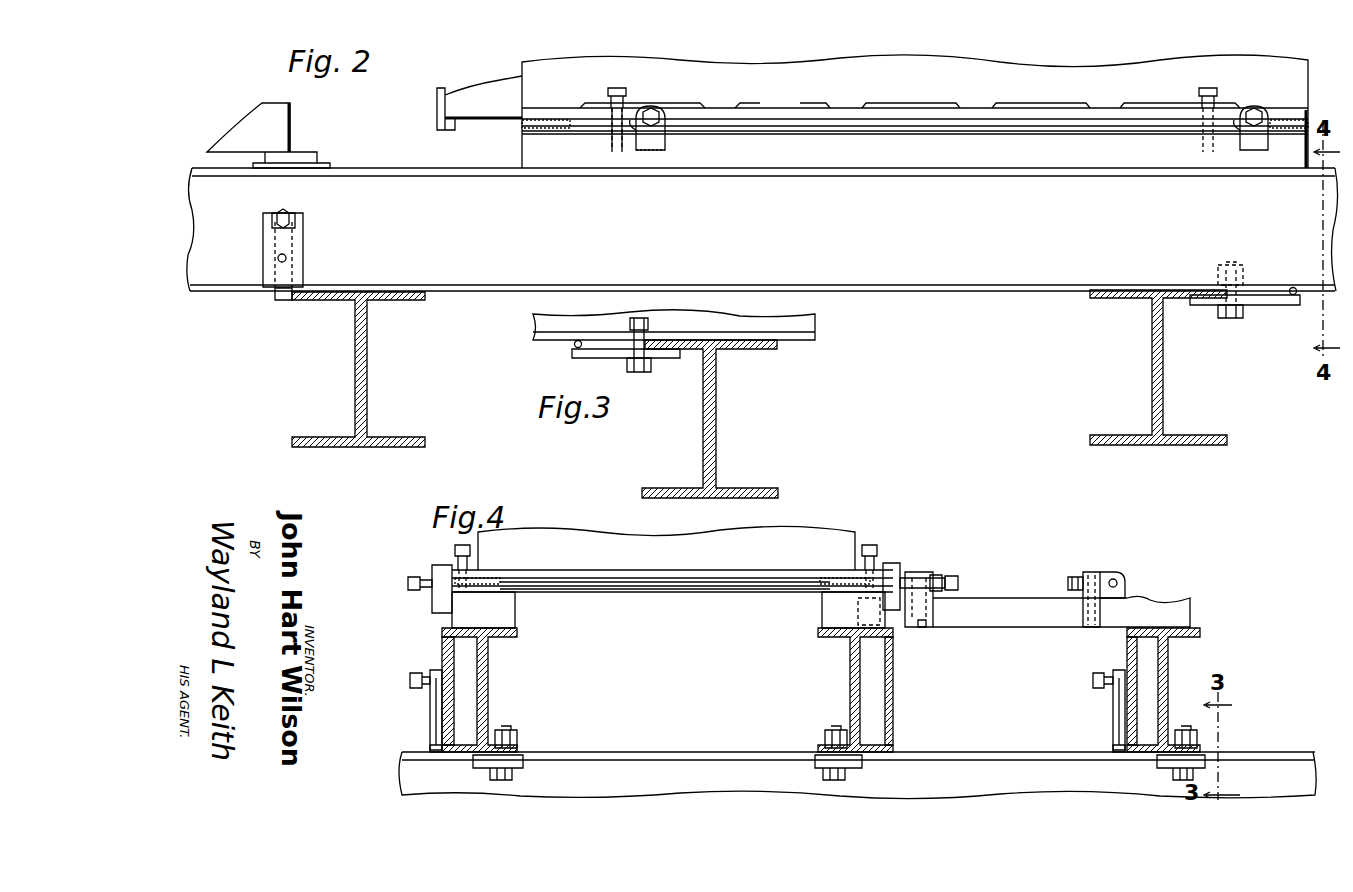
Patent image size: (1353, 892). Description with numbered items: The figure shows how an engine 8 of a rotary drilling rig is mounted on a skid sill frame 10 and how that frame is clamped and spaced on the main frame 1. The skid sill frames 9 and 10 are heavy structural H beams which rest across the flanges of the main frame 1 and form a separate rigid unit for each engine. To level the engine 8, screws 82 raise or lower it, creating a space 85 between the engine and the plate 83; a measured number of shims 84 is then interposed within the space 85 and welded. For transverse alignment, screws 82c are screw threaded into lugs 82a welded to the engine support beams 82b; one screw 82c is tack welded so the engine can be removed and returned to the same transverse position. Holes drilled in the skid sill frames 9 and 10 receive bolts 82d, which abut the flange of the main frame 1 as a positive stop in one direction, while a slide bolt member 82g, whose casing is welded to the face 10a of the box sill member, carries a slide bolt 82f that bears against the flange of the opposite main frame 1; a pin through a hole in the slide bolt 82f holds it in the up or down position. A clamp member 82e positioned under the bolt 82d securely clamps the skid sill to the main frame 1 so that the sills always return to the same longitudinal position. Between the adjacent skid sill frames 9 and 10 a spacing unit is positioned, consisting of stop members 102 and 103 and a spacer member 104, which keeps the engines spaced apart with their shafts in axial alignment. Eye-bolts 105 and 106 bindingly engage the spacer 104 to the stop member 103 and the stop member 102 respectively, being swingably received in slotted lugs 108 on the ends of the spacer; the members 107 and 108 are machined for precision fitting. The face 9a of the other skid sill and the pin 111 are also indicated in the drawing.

In FIG. 2, the main frame 1 is at (368, 367).
In FIG. 3, the main frame 1 is at (716, 408).
In FIG. 4, the main frame 1 is at (654, 760).
In FIG. 2, the engine 8 is at (810, 62).
In FIG. 4, the engine 8 is at (852, 536).
In FIG. 4, the skid sill frame 9 is at (1168, 664).
In FIG. 4, the beam plate 9a is at (1107, 691).
In FIG. 2, the skid sill frame 10 is at (452, 278).
In FIG. 3, the skid sill frame 10 is at (812, 326).
In FIG. 4, the skid sill frame 10 is at (484, 672).
In FIG. 4, the face of the box sill member 10a is at (442, 640).
In FIG. 2, the screws 82 is at (626, 92).
In FIG. 4, the screws 82 is at (455, 550).
In FIG. 2, the lugs 82a is at (662, 146).
In FIG. 4, the lugs 82a is at (434, 596).
In FIG. 4, the engine support beams 82b is at (508, 608).
In FIG. 2, the screws 82c is at (640, 132).
In FIG. 4, the screws 82c is at (408, 583).
In FIG. 2, the bolts 82d is at (1246, 310).
In FIG. 3, the bolts 82d is at (640, 372).
In FIG. 4, the bolts 82d is at (504, 730).
In FIG. 2, the clamp member 82e is at (1282, 303).
In FIG. 3, the clamp member 82e is at (585, 358).
In FIG. 4, the clamp member 82e is at (523, 764).
In FIG. 2, the slide bolt 82f is at (284, 302).
In FIG. 4, the slide bolt 82f is at (430, 750).
In FIG. 2, the slide bolt member 82g is at (262, 272).
In FIG. 4, the slide bolt member 82g is at (430, 706).
In FIG. 2, the plate 83 is at (525, 135).
In FIG. 4, the plate 83 is at (540, 580).
In FIG. 2, the shims 84 is at (522, 124).
In FIG. 4, the shims 84 is at (494, 572).
In FIG. 2, the space 85 is at (1045, 121).
In FIG. 4, the space 85 is at (688, 592).
In FIG. 4, the stop member 102 is at (1132, 598).
In FIG. 4, the stop member 103 is at (905, 640).
In FIG. 4, the spacer member 104 is at (986, 627).
In FIG. 4, the eye-bolt 105 is at (958, 583).
In FIG. 4, the eye-bolt 106 is at (1068, 582).
In FIG. 4, the member 107 is at (1094, 572).
In FIG. 4, the lugs 108 is at (1088, 572).
In FIG. 4, the pin 111 is at (926, 630).